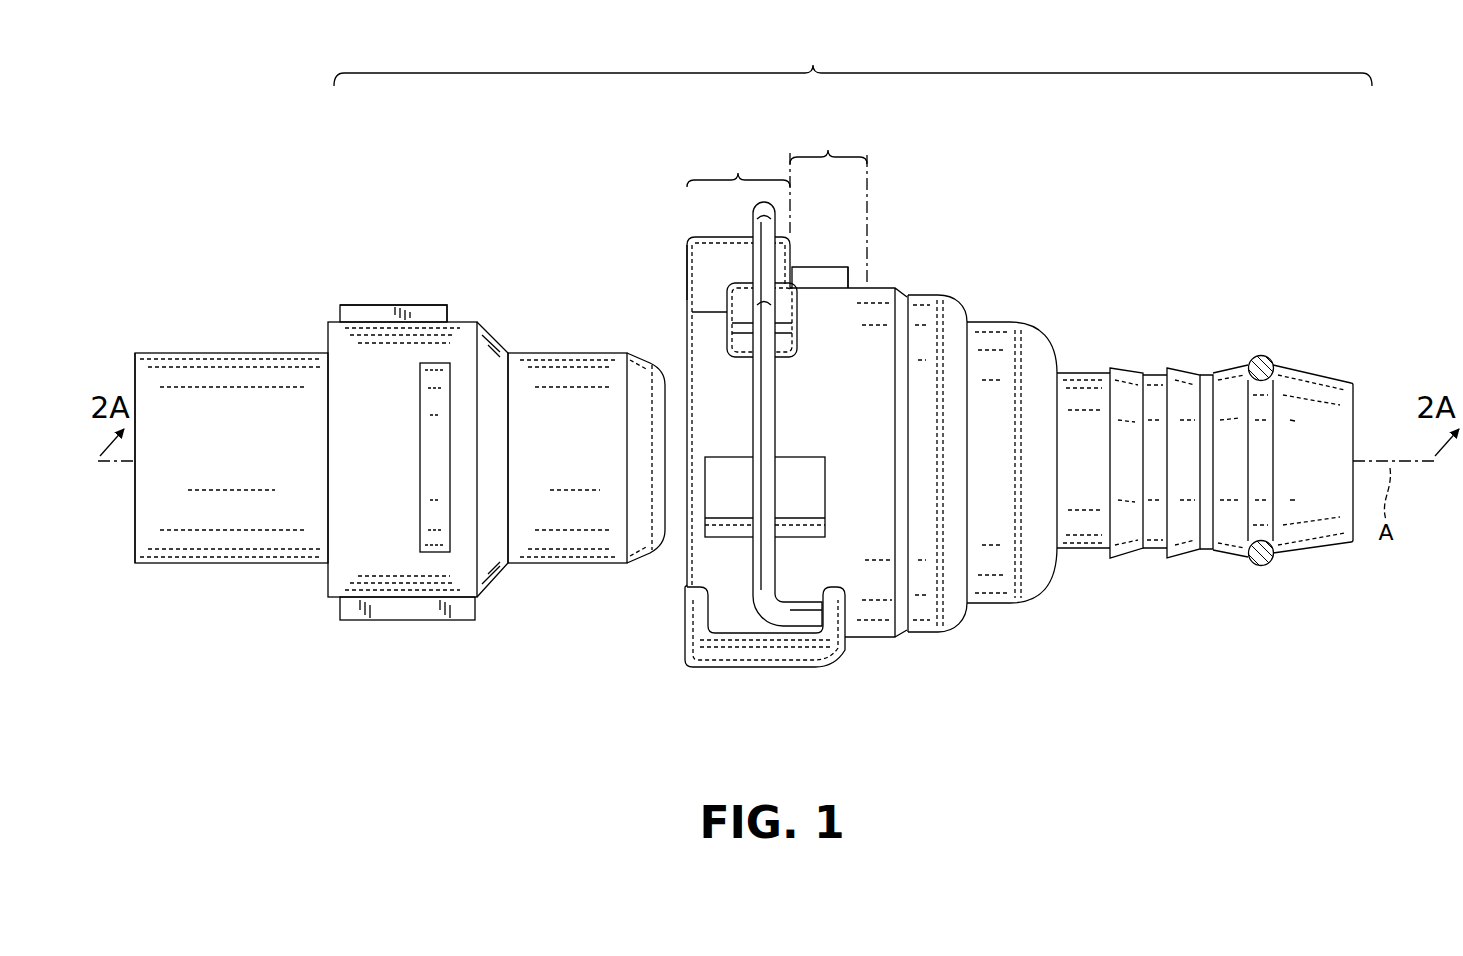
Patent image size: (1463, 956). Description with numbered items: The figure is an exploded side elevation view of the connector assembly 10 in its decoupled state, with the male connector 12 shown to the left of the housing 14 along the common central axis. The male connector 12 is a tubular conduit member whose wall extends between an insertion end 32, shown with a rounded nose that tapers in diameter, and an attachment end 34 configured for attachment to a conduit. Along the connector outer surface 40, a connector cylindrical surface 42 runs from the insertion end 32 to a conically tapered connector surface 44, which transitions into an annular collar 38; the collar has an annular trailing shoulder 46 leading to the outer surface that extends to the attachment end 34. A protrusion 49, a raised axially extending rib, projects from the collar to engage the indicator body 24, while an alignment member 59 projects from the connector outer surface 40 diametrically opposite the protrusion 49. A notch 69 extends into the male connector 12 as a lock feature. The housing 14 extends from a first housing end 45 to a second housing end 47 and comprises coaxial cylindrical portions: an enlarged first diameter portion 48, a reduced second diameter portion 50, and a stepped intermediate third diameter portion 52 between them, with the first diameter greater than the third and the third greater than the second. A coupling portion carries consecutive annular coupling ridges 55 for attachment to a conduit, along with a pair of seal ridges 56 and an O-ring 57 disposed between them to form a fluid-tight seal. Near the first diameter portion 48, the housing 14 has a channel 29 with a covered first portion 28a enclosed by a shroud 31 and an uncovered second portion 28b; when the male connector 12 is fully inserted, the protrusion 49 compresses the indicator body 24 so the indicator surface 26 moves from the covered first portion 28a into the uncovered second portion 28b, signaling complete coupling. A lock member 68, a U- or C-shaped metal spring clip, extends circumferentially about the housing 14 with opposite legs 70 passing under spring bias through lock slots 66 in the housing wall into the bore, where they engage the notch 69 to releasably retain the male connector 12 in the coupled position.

The connector assembly 10 is at (853, 61).
The male connector 12 is at (370, 228).
The housing 14 is at (995, 217).
The indicator body 24 is at (832, 262).
The indicator surface 26 is at (847, 260).
The covered first portion 28a is at (738, 167).
The uncovered second portion 28b is at (828, 143).
The channel 29 is at (866, 270).
The shroud 31 is at (712, 237).
The insertion end 32 is at (676, 540).
The attachment end 34 is at (135, 540).
The annular collar 38 is at (360, 318).
The connector outer surface 40 is at (213, 350).
The connector cylindrical surface 42 is at (542, 566).
The tapered connector surface 44 is at (495, 578).
The first housing end 45 is at (1355, 402).
The annular trailing shoulder 46 is at (326, 330).
The second housing end 47 is at (685, 268).
The first diameter portion 48 is at (908, 703).
The protrusion 49 is at (437, 305).
The second diameter portion 50 is at (967, 655).
The third diameter portion 52 is at (967, 655).
The coupling ridges 55 is at (1105, 367).
The seal ridges 56 is at (1272, 565).
The O-ring 57 is at (1263, 355).
The alignment member 59 is at (376, 620).
The lock slots 66 is at (762, 420).
The lock member 68 is at (763, 215).
The notch 69 is at (420, 453).
The legs 70 is at (782, 437).